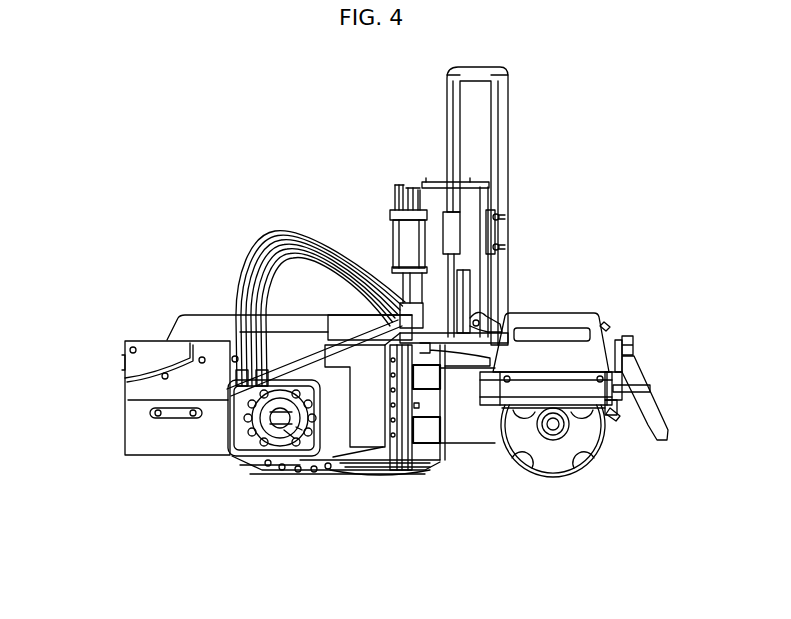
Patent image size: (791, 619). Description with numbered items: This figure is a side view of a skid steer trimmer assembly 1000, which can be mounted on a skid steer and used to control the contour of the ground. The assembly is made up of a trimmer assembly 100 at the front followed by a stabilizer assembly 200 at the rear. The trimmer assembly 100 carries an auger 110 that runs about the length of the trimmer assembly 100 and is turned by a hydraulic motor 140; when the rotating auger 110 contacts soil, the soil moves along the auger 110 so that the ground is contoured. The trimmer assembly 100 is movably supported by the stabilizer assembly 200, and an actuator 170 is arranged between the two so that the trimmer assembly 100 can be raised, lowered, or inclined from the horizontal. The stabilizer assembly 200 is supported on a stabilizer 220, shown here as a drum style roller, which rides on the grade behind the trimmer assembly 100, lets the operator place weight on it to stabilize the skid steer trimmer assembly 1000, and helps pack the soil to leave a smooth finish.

The skid steer trimmer assembly 1000 is at (160, 206).
The trimmer assembly 100 is at (155, 488).
The auger 110 is at (314, 472).
The hydraulic motor 140 is at (276, 433).
The second actuator 170 is at (403, 240).
The stabilizer assembly 200 is at (490, 494).
The stabilizer 220 is at (553, 462).